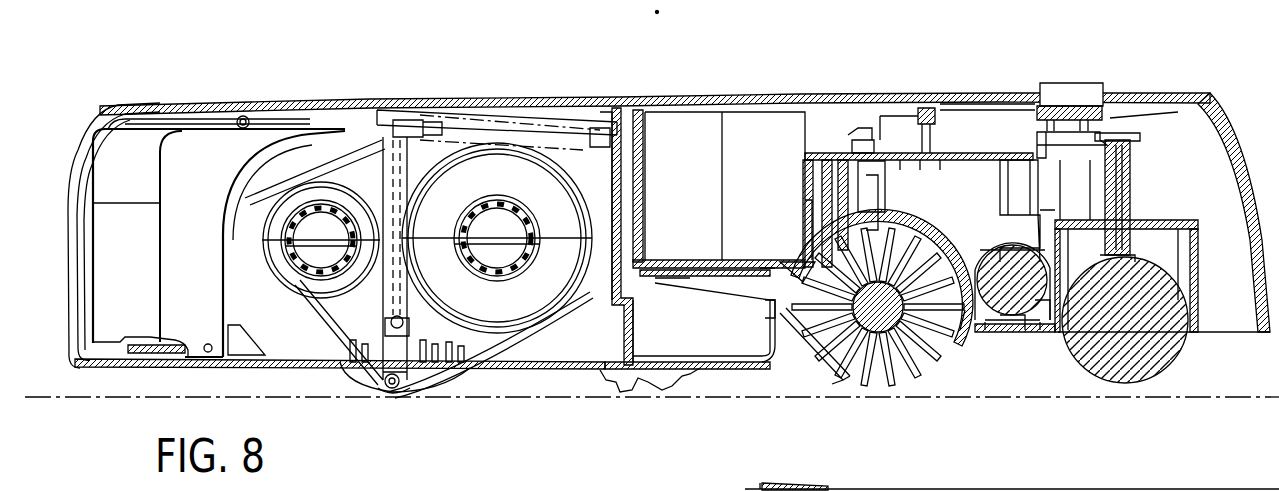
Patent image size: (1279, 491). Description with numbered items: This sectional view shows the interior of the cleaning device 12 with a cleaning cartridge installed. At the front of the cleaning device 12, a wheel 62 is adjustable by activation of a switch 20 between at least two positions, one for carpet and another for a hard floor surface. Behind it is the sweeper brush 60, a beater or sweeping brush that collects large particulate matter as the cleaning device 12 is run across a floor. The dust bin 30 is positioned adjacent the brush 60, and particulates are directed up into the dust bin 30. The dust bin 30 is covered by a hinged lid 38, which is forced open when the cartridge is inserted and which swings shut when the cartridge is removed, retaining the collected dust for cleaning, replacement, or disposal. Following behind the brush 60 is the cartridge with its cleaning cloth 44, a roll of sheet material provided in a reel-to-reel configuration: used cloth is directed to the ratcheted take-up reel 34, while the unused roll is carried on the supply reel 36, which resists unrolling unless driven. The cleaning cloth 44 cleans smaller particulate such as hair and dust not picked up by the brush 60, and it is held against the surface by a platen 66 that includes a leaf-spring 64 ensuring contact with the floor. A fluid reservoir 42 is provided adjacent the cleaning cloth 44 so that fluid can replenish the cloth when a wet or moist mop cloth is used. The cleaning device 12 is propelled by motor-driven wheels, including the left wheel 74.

The cleaning device 12 is at (1170, 86).
The switch 20 is at (1065, 88).
The dust bin 30 is at (672, 340).
The take-up reel 34 is at (323, 183).
The supply reel 36 is at (545, 157).
The hinged lid 38 is at (748, 270).
The fluid reservoir 42 is at (208, 150).
The cleaning cloth 44 is at (425, 388).
The sweeper brush 60 is at (902, 385).
The wheel 62 is at (1180, 342).
The leaf-spring 64 is at (478, 385).
The platen 66 is at (391, 388).
The left wheel 74 is at (632, 388).